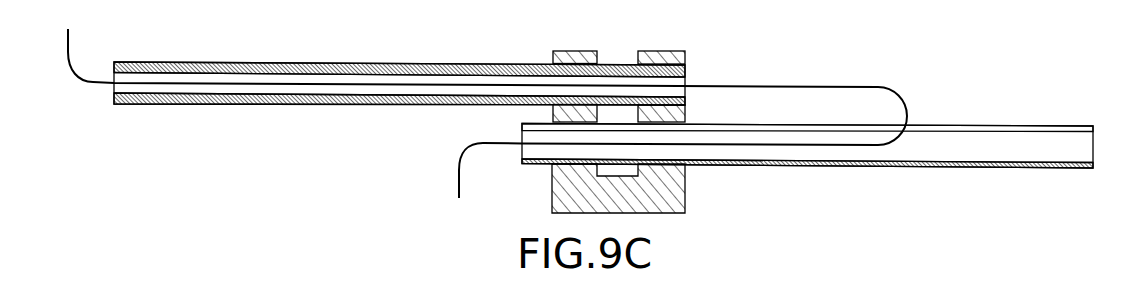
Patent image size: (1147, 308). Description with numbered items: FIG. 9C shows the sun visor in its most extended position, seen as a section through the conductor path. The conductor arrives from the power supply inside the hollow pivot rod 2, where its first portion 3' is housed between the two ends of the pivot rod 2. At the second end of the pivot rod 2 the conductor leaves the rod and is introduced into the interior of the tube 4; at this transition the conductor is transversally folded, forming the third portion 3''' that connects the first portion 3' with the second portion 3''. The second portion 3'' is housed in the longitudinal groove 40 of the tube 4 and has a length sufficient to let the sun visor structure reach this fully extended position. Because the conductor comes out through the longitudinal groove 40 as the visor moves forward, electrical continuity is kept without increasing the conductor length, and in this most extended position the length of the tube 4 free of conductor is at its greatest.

The pivot rod 2 is at (332, 62).
The first portion 3' is at (473, 50).
The second portion 3'' is at (668, 194).
The third portion 3''' is at (956, 103).
The tube 4 is at (977, 167).
The longitudinal groove 40 is at (1076, 128).